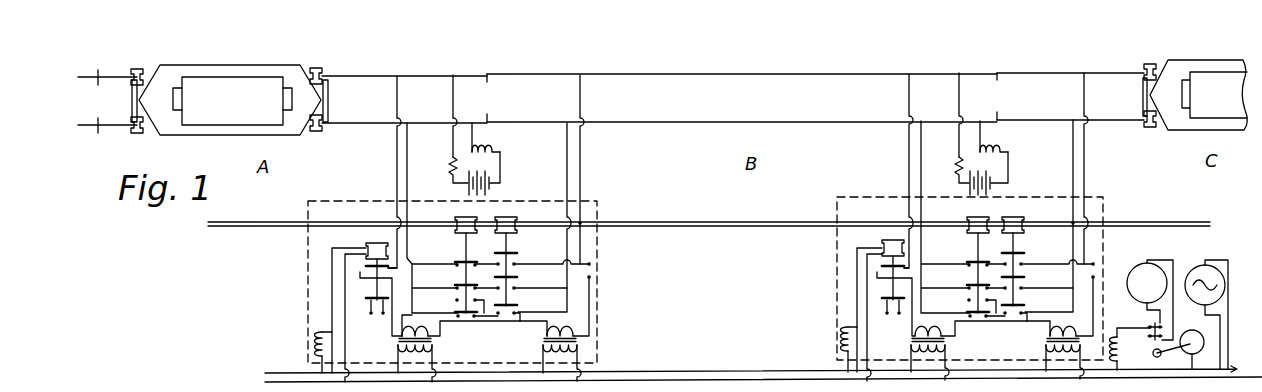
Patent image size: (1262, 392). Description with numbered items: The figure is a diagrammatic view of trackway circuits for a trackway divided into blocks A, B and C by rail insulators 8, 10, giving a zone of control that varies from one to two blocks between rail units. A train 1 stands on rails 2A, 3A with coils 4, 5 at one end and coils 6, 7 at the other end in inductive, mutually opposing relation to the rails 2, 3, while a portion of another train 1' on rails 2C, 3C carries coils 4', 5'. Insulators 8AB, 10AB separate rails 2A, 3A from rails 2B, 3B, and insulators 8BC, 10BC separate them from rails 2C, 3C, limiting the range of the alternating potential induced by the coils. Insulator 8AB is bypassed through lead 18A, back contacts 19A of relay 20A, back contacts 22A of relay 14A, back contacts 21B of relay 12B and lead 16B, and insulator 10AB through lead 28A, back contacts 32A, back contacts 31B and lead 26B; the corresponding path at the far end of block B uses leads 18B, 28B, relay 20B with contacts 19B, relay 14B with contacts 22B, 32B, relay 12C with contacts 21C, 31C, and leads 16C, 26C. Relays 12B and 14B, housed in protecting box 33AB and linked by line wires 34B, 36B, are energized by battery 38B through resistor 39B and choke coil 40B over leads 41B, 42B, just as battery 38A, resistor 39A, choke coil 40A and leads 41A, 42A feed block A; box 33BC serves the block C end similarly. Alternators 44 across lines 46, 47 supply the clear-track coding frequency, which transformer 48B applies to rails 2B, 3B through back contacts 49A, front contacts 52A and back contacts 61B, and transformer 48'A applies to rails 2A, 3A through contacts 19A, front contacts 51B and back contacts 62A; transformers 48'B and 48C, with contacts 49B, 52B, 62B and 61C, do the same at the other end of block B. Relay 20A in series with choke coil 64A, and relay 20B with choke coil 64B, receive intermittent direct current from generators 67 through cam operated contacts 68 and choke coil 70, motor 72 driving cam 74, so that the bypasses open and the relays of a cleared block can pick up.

The train 1 is at (230, 87).
The train 1' is at (1195, 86).
The rail 2 is at (94, 74).
The rail 3 is at (98, 122).
The coil 4 is at (138, 65).
The coil 4' is at (1152, 63).
The coil 5 is at (140, 135).
The coil 5' is at (1152, 131).
The coil 6 is at (321, 72).
The coil 7 is at (320, 133).
The rail insulator 8 is at (100, 71).
The rail insulator 10 is at (100, 126).
The rail 2A is at (355, 75).
The rail 3A is at (355, 123).
The rail 2B is at (764, 74).
The rail 3B is at (767, 122).
The rail 2C is at (1040, 73).
The rail 3C is at (1088, 120).
The rail insulator 8AB is at (487, 76).
The rail insulator 10AB is at (487, 118).
The rail insulator 8BC is at (997, 75).
The rail insulator 10BC is at (997, 116).
The lead 18A is at (394, 166).
The lead 28A is at (406, 183).
The lead 18B is at (908, 136).
The lead 28B is at (920, 149).
The lead 16B is at (581, 136).
The lead 26B is at (568, 148).
The lead 16C is at (1086, 137).
The lead 26C is at (1074, 148).
The lead 41A is at (452, 139).
The current limiting resistor 39A is at (451, 172).
The battery 38A is at (492, 184).
The choke coil 40A is at (496, 149).
The lead 42A is at (474, 134).
The lead 41B is at (958, 141).
The current limiting resistor 39B is at (957, 165).
The battery 38B is at (992, 177).
The choke coil 40B is at (1003, 149).
The lead 42B is at (982, 134).
The line wire 34B is at (688, 222).
The line wire 36B is at (702, 228).
The line 46 is at (690, 372).
The line 47 is at (693, 381).
The protecting box 33AB is at (307, 251).
The protecting box 33BC is at (836, 258).
The choke coil 64A is at (320, 332).
The choke coil 64B is at (846, 327).
The relay 20A is at (376, 242).
The relay 20B is at (892, 239).
The back contacts 19A is at (366, 274).
The back contacts 19B is at (882, 274).
The back contacts 49A is at (368, 314).
The back contacts 49B is at (884, 314).
The track circuit relay 14A is at (457, 216).
The track circuit relay 14B is at (968, 216).
The track circuit relay 12B is at (504, 217).
The track circuit relay 12C is at (1006, 217).
The back contacts 22A is at (455, 262).
The back contacts 32A is at (454, 285).
The front contacts 52A is at (456, 299).
The back contacts 62A is at (455, 314).
The back contacts 21B is at (516, 255).
The back contacts 31B is at (516, 279).
The front contacts 51B is at (516, 303).
The back contacts 61B is at (497, 312).
The back contacts 22B is at (967, 262).
The back contacts 32B is at (966, 285).
The front contacts 52B is at (968, 298).
The back contacts 62B is at (966, 314).
The back contacts 21C is at (1017, 256).
The back contacts 31C is at (1017, 279).
The back contacts 61C is at (1005, 312).
The transformer 48'A is at (459, 348).
The transformer 48B is at (543, 343).
The transformer 48'B is at (969, 350).
The transformer 48C is at (1046, 343).
The direct current generator 67 is at (1140, 262).
The alternator 44 is at (1192, 270).
The cam operated contacts 68 is at (1148, 326).
The choke coil 70 is at (1112, 345).
The motor 72 is at (1198, 334).
The cam 74 is at (1160, 355).